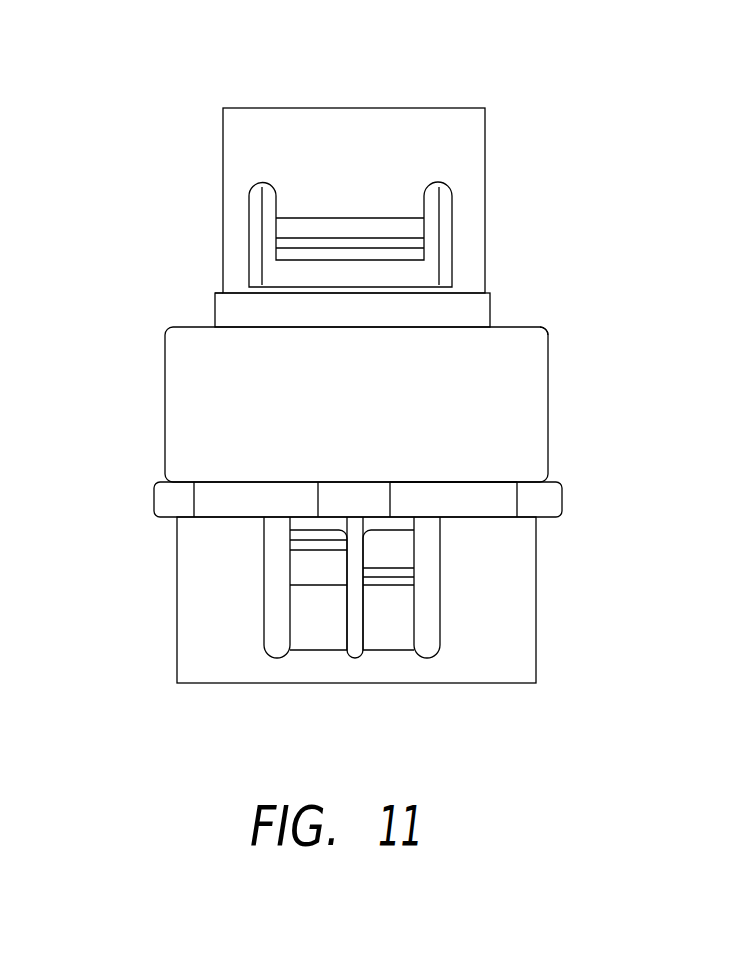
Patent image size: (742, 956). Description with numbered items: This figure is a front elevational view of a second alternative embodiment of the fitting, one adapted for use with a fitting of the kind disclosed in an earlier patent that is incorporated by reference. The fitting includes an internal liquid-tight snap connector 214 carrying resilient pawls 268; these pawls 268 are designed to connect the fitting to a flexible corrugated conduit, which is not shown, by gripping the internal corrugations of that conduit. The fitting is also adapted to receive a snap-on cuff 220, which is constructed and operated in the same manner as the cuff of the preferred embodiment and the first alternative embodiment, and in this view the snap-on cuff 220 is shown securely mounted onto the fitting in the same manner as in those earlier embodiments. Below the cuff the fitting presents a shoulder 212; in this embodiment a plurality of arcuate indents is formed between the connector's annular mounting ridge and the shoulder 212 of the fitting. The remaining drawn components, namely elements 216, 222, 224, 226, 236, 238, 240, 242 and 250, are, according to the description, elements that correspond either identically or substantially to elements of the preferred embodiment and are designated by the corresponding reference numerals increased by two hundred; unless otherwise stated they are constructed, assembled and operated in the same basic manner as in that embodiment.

The shoulder 212 is at (543, 503).
The snap connector 214 is at (517, 247).
The lower housing 216 is at (507, 612).
The snap-on cuff 220 is at (567, 402).
The upper post 222 is at (240, 133).
The platform 224 is at (243, 310).
The shoulder 226 is at (213, 293).
The collar segment 236 is at (473, 511).
The left channel 238 is at (320, 625).
The right channel 240 is at (375, 630).
The ribs 242 is at (292, 531).
The rounded corner 250 is at (522, 345).
The resilient pawls 268 is at (358, 245).